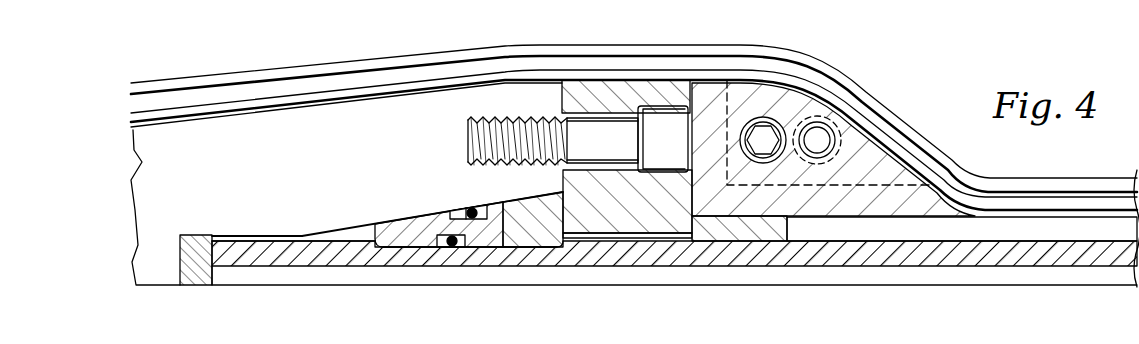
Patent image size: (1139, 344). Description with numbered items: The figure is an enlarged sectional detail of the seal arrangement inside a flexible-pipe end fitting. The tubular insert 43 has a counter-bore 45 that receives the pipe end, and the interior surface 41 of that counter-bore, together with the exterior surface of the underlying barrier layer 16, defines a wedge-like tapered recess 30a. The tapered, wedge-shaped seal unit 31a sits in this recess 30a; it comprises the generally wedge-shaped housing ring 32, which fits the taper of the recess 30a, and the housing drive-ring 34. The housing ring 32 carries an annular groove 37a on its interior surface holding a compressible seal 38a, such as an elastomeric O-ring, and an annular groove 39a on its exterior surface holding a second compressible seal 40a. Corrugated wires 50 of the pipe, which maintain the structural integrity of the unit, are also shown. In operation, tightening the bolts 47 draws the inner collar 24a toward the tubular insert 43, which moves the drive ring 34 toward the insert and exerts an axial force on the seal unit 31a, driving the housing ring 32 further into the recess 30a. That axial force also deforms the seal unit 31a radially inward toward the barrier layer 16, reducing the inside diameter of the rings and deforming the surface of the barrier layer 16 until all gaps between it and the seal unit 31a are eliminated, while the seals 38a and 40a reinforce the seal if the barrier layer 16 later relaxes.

The barrier layer 16 is at (855, 258).
The inner collar 24a is at (563, 92).
The tapered recess 30a is at (550, 192).
The seal unit 31a is at (388, 212).
The housing ring 32 is at (409, 257).
The housing drive-ring 34 is at (563, 250).
The annular groove 37a is at (467, 248).
The compressible seal 38a is at (452, 247).
The annular groove 39a is at (453, 211).
The compressible seal 40a is at (470, 207).
The interior surface 41 is at (350, 237).
The tubular insert 43 is at (140, 162).
The counter-bore 45 is at (177, 250).
The bolts 47 is at (467, 116).
The corrugated wires 50 is at (320, 63).